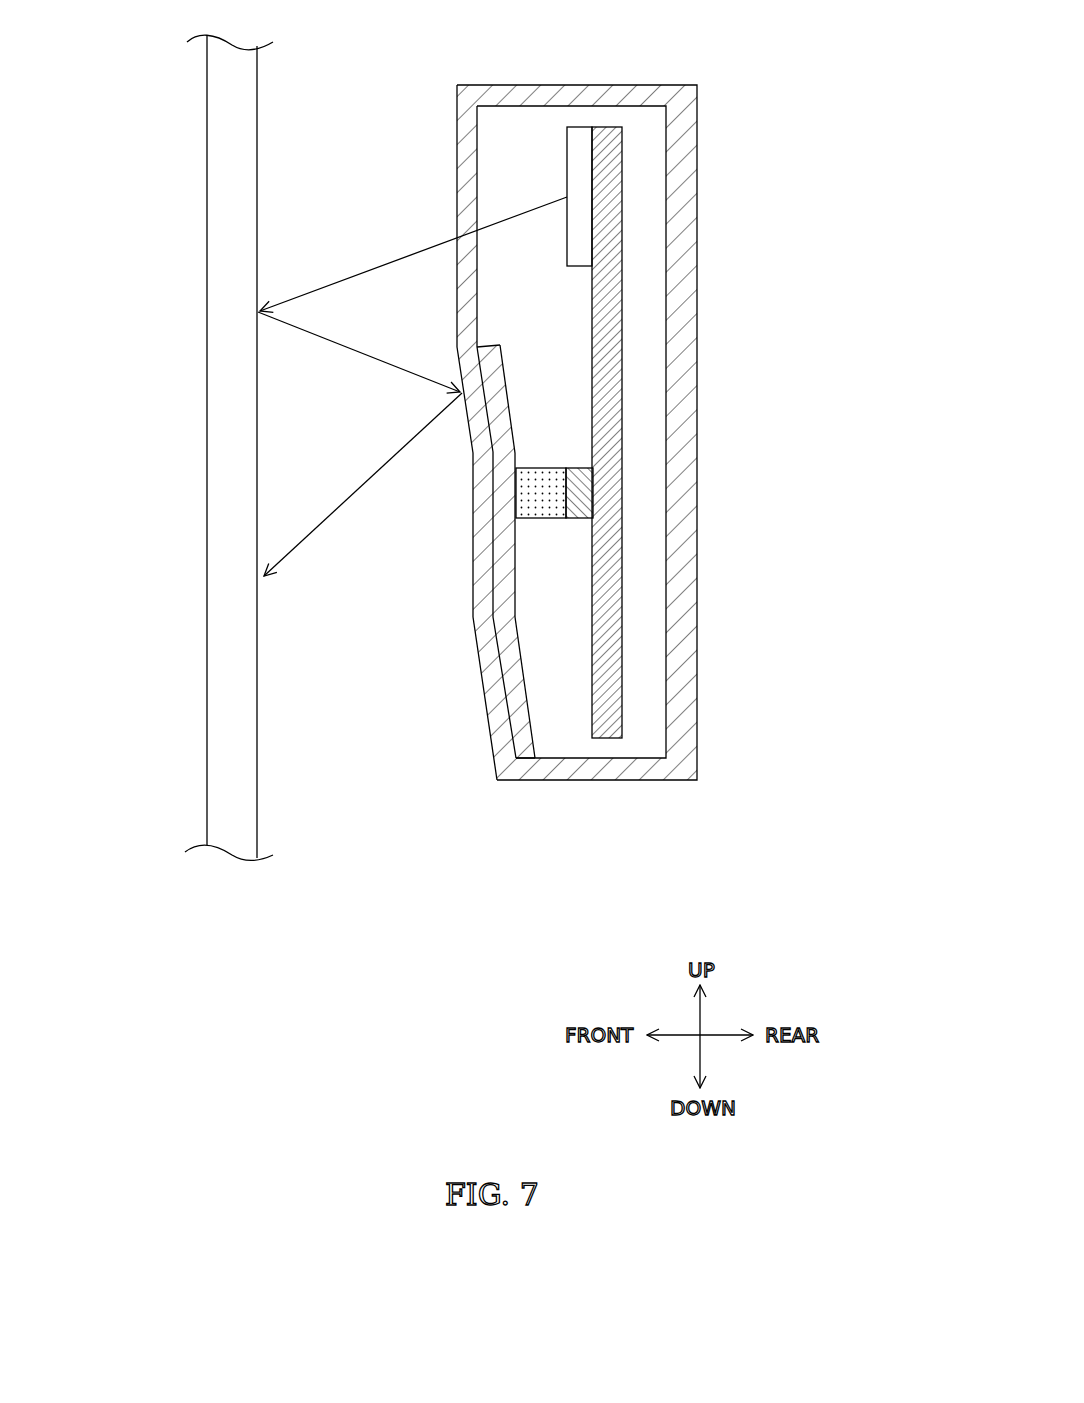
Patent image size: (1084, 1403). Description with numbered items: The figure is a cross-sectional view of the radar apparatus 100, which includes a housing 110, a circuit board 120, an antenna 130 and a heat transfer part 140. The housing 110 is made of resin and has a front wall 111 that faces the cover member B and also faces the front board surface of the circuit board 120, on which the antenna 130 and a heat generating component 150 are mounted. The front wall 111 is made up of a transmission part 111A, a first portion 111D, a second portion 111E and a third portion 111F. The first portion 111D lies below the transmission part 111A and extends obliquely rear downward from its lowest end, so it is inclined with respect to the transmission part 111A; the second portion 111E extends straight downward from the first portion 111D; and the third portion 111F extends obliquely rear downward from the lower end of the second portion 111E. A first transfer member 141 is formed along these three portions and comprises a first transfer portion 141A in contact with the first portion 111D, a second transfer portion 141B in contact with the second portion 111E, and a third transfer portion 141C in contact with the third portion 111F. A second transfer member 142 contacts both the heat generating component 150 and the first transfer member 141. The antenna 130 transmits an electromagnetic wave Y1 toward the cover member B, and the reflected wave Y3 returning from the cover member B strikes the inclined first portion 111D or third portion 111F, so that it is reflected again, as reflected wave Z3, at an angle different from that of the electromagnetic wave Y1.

The radar apparatus 100 is at (856, 91).
The housing 110 is at (717, 85).
The front wall 111 is at (455, 135).
The transmission part 111A is at (465, 175).
The first portion 111D is at (477, 422).
The second portion 111E is at (480, 538).
The third portion 111F is at (495, 700).
The circuit board 120 is at (620, 133).
The antenna 130 is at (580, 130).
The heat transfer part 140 is at (562, 724).
The first transfer member 141 is at (505, 346).
The first transfer portion 141A is at (485, 353).
The second transfer portion 141B is at (507, 580).
The third transfer portion 141C is at (513, 673).
The second transfer member 142 is at (547, 493).
The heat generating component 150 is at (578, 503).
The cover member B is at (222, 215).
The electromagnetic wave Y1 is at (380, 262).
The reflected wave Y3 is at (357, 357).
The reflected wave Z3 is at (355, 492).